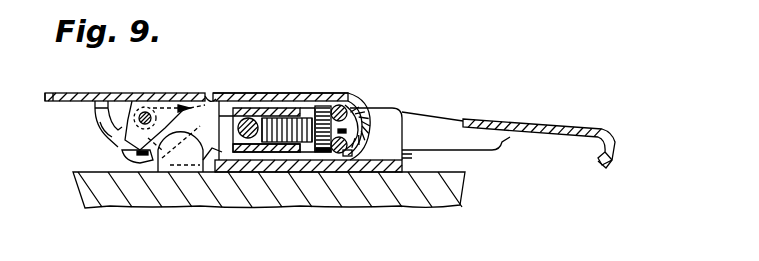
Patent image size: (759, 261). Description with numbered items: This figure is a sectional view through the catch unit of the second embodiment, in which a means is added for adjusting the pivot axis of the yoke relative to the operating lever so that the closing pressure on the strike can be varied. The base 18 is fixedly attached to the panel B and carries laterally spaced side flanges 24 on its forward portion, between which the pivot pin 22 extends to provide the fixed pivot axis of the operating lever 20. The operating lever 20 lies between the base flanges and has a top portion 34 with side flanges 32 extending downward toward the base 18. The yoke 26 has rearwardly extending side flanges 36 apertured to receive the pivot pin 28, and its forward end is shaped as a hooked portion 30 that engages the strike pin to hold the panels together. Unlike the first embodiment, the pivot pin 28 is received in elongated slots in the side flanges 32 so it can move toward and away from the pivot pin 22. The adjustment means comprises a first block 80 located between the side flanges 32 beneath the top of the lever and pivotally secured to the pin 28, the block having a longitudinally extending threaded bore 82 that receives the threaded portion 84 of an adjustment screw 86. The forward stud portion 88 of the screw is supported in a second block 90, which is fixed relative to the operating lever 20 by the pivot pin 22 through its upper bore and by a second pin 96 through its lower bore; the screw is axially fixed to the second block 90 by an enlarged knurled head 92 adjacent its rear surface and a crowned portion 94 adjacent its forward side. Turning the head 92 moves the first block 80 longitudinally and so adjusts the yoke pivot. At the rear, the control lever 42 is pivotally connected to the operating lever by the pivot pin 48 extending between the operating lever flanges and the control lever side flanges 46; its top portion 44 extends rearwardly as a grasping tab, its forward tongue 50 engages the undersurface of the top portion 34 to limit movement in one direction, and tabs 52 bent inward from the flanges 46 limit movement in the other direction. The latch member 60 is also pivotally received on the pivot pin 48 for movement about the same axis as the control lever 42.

The top portion 44 is at (53, 93).
The control lever 42 is at (62, 93).
The latch member 60 is at (133, 108).
The pivot pin 48 is at (150, 114).
The tongue 50 is at (209, 96).
The pivot pin 28 is at (247, 126).
The top portion 34 is at (265, 97).
The first block 80 is at (286, 112).
The operating lever 20 is at (330, 92).
The pivot pin 22 is at (357, 103).
The second block 90 is at (352, 118).
The crowned portion 94 is at (357, 132).
The stud portion 88 is at (352, 146).
The base 18 is at (405, 167).
The side flanges 24 is at (413, 155).
The yoke 26 is at (533, 123).
The side flanges 36 is at (492, 147).
The hooked portion 30 is at (620, 145).
The side flanges 32 is at (108, 113).
The side flanges 46 is at (100, 130).
The tabs 52 is at (120, 147).
The threaded bore 82 is at (275, 150).
The adjustment screw 86 is at (300, 147).
The threaded portion 84 is at (314, 148).
The head 92 is at (328, 152).
The second pin 96 is at (350, 153).
The panel B is at (432, 205).